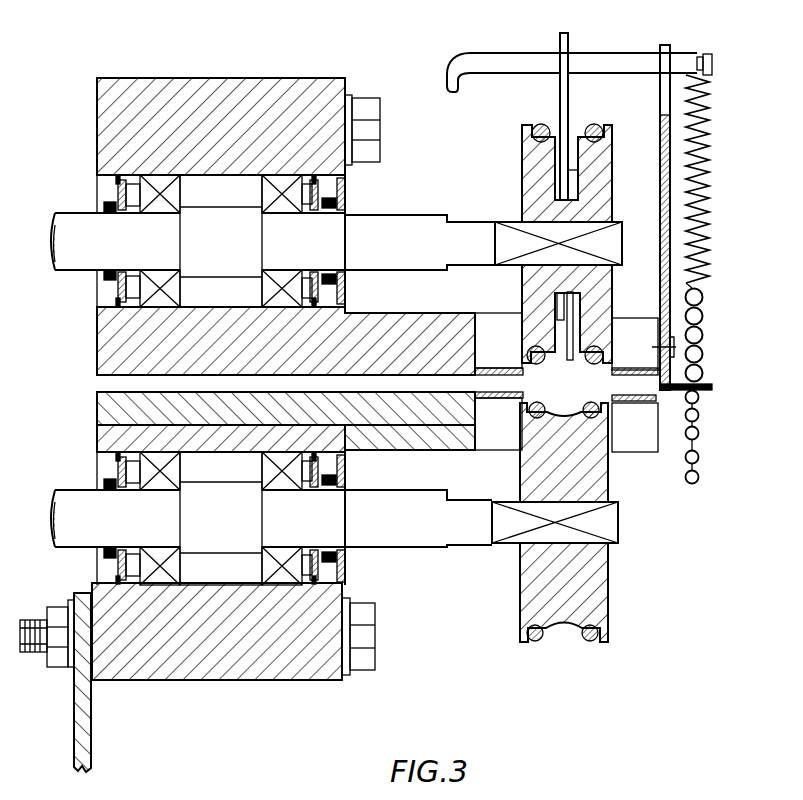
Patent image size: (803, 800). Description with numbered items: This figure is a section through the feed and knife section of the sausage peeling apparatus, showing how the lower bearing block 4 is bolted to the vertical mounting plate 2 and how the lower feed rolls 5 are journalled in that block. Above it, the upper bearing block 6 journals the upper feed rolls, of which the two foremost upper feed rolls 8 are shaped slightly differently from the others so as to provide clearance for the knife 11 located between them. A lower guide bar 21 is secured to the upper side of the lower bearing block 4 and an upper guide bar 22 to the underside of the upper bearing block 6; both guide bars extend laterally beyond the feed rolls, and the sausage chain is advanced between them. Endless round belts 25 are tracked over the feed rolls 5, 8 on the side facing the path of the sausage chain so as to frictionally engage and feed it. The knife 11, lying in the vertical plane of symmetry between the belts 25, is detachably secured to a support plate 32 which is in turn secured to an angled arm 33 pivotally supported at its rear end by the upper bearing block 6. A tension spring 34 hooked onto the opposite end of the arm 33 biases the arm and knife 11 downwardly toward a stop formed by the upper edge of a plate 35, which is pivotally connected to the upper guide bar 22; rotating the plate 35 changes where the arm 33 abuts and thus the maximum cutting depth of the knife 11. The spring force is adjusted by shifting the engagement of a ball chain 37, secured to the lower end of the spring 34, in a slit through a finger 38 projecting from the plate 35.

The vertical mounting plate 2 is at (86, 736).
The lower bearing block 4 is at (207, 676).
The lower feed rolls 5 is at (597, 602).
The upper bearing block 6 is at (224, 95).
The upper feed rolls 8 is at (604, 180).
The knife 11 is at (574, 310).
The lower guide bar 21 is at (100, 400).
The upper guide bar 22 is at (100, 340).
The endless round belts 25 is at (541, 123).
The support plate 32 is at (570, 46).
The angled arm 33 is at (497, 57).
The tension spring 34 is at (704, 158).
The plate 35 is at (662, 123).
The ball chain 37 is at (700, 337).
The finger 38 is at (681, 390).